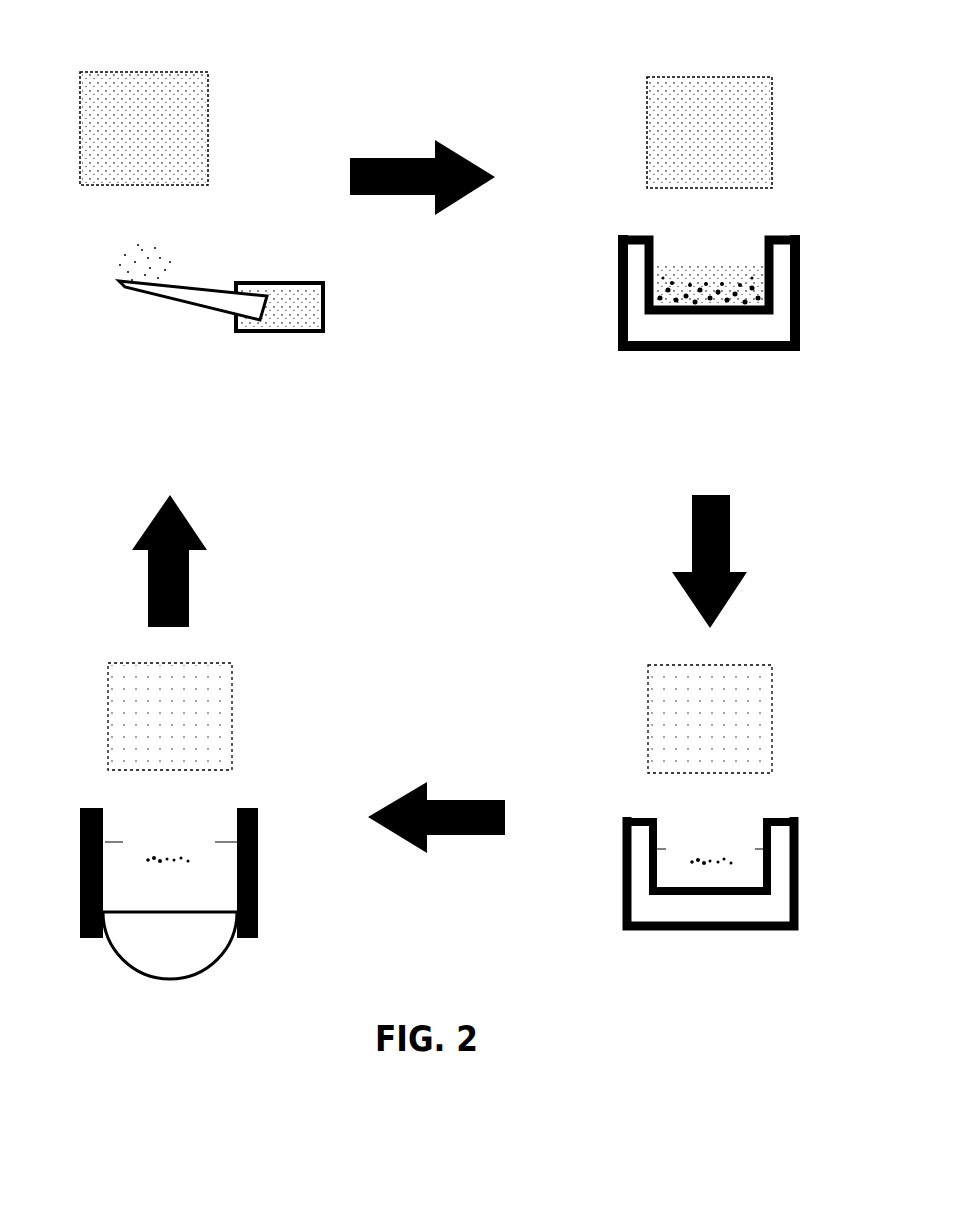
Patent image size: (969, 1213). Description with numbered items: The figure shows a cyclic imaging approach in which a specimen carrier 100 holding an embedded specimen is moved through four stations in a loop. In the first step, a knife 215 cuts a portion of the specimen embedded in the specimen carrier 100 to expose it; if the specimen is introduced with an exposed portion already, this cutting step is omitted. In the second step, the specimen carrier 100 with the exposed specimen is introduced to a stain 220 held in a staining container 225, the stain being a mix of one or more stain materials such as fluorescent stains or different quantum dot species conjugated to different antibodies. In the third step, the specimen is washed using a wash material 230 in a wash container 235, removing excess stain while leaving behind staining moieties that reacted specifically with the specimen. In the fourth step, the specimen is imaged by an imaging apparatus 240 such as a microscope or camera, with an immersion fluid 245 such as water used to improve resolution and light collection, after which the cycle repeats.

The specimen carrier 100 is at (147, 50).
The knife 215 is at (224, 313).
The stain 220 is at (747, 295).
The staining container 225 is at (685, 290).
The wash material 230 is at (730, 910).
The wash container 235 is at (795, 862).
The imaging apparatus 240 is at (208, 952).
The immersion fluid 245 is at (108, 888).